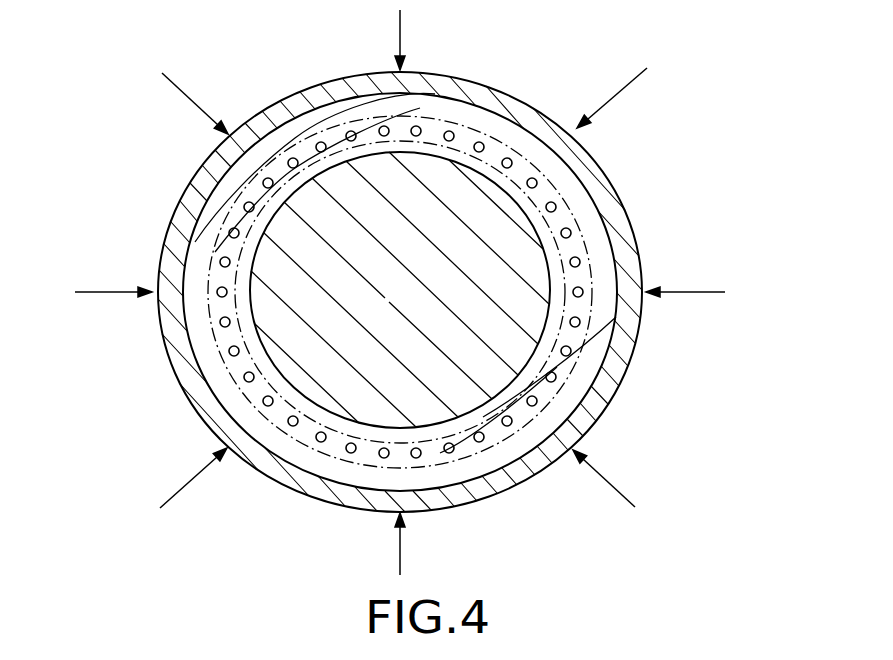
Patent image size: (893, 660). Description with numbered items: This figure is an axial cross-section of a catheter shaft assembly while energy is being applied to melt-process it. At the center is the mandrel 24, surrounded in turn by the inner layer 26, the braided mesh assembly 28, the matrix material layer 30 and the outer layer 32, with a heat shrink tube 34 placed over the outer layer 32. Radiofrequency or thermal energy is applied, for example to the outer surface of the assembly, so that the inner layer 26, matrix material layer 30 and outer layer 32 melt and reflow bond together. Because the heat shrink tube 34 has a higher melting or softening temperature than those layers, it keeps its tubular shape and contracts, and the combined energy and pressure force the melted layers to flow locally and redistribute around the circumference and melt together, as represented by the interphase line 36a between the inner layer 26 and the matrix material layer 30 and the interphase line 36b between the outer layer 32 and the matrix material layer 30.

The mandrel 24 is at (387, 302).
The inner layer 26 is at (534, 225).
The braided mesh assembly 28 is at (348, 450).
The matrix material layer 30 is at (223, 378).
The outer layer 32 is at (600, 349).
The heat shrink tube 34 is at (508, 472).
The interphase line 36a is at (470, 130).
The interphase line 36b is at (205, 240).